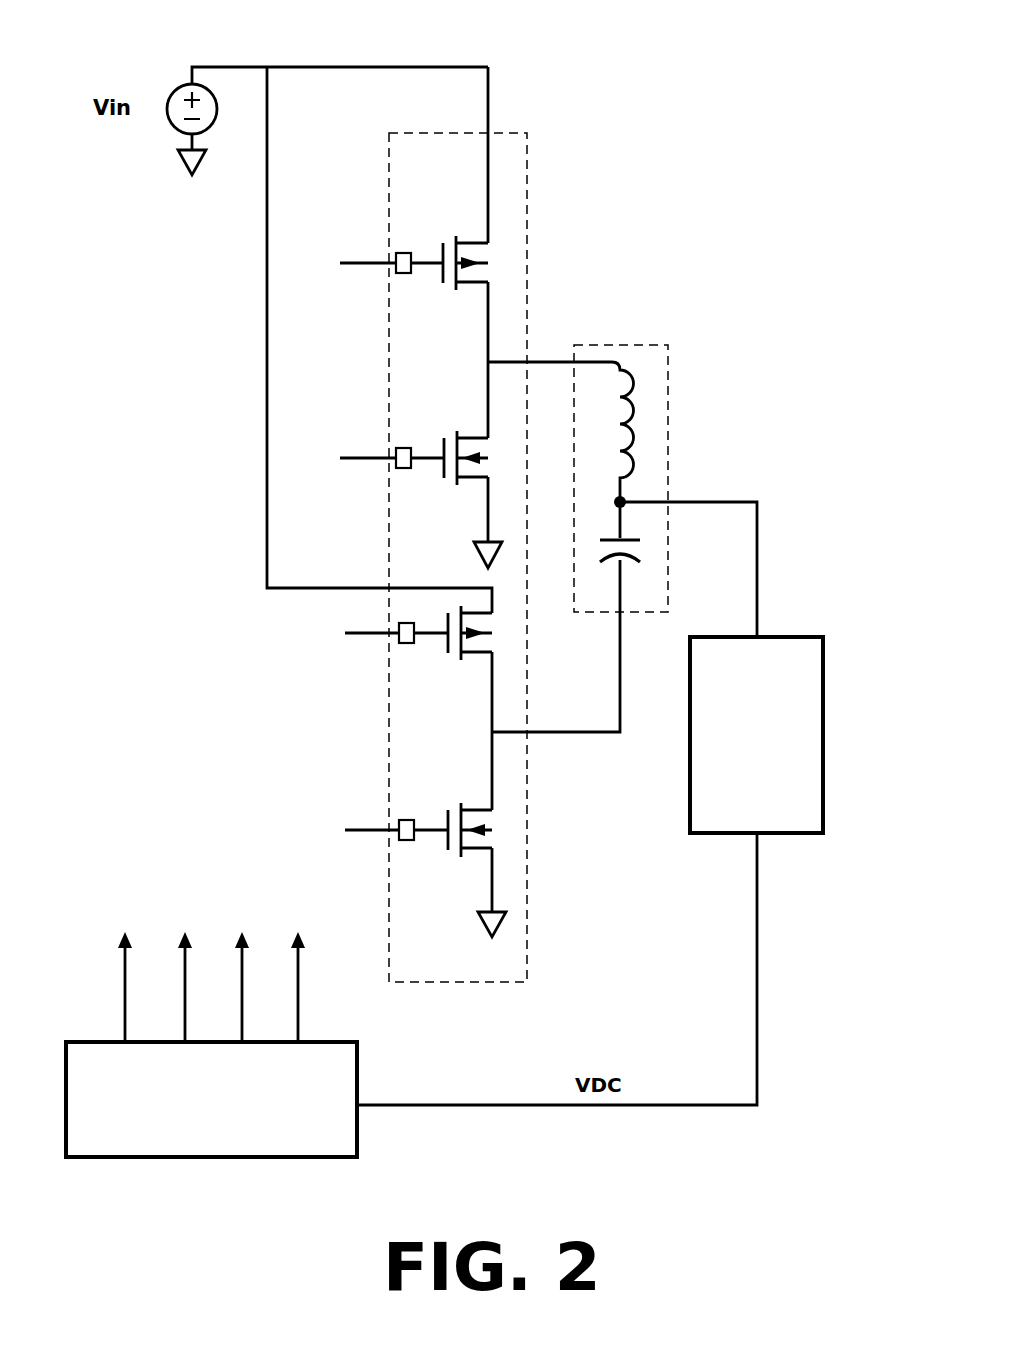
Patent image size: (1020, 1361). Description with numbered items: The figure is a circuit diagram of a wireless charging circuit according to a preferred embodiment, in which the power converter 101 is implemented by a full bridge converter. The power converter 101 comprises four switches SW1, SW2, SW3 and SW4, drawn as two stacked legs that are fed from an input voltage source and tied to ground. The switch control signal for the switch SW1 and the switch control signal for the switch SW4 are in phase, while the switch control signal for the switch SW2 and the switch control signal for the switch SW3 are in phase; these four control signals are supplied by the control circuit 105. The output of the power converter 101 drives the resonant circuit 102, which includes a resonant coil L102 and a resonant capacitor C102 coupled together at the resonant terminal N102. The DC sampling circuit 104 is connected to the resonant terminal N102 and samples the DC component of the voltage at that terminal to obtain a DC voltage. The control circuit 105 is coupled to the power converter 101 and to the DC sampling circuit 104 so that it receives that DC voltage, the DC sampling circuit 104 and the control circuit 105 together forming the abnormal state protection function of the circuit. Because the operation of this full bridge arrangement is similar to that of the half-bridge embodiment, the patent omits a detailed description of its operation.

The power converter 101 is at (527, 133).
The resonant circuit 102 is at (643, 345).
The resonant coil L102 is at (632, 415).
The resonant terminal N102 is at (625, 495).
The resonant capacitor C102 is at (641, 546).
The DC sampling circuit 104 is at (823, 730).
The control circuit 105 is at (177, 1157).
The switch SW1 is at (397, 276).
The switch SW2 is at (397, 479).
The switch SW3 is at (401, 649).
The switch SW4 is at (401, 850).